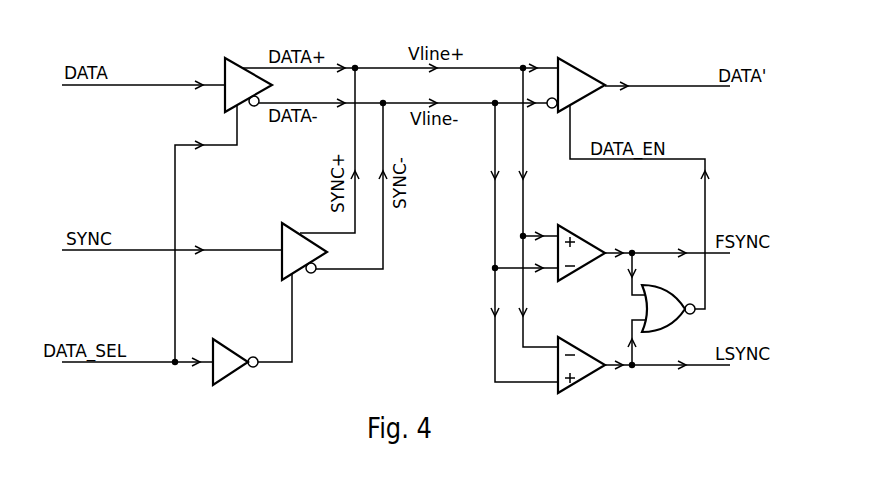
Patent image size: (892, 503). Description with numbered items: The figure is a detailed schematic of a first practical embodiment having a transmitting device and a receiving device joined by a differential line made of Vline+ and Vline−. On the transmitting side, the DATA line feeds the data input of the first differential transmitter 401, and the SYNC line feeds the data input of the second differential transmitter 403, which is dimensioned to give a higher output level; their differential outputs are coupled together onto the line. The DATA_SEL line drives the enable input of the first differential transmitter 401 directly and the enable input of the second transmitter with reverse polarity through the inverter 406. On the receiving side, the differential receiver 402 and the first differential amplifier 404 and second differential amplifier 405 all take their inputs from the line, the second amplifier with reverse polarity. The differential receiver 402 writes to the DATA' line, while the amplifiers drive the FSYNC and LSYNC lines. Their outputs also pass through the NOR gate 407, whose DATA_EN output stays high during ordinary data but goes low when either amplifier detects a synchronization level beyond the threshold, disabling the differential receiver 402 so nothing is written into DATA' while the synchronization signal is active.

The first differential transmitter 401 is at (229, 58).
The differential receiver 402 is at (568, 58).
The second differential transmitter 403 is at (284, 223).
The first differential amplifier 404 is at (568, 225).
The second differential amplifier 405 is at (568, 337).
The inverter 406 is at (222, 340).
The NOR gate 407 is at (650, 289).